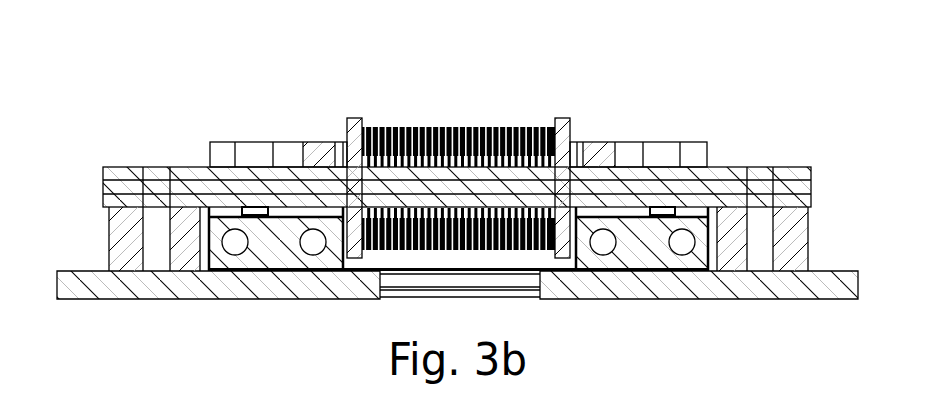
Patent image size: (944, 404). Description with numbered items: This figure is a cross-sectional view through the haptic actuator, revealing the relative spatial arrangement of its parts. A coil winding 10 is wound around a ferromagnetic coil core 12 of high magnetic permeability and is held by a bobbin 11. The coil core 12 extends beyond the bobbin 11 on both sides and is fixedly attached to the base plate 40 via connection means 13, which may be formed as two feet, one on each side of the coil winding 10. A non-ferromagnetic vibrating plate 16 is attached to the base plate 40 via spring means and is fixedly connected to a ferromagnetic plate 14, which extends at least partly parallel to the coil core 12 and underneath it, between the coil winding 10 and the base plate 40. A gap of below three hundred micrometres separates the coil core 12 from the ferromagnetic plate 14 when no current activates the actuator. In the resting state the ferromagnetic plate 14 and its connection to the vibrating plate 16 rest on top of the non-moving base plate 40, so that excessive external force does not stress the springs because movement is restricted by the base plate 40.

The coil winding 10 is at (462, 127).
The bobbin 11 is at (562, 120).
The coil core 12 is at (300, 198).
The connection means 13 is at (158, 257).
The ferromagnetic plate 14 is at (630, 242).
The vibrating plate 16 is at (693, 155).
The base plate 40 is at (245, 290).